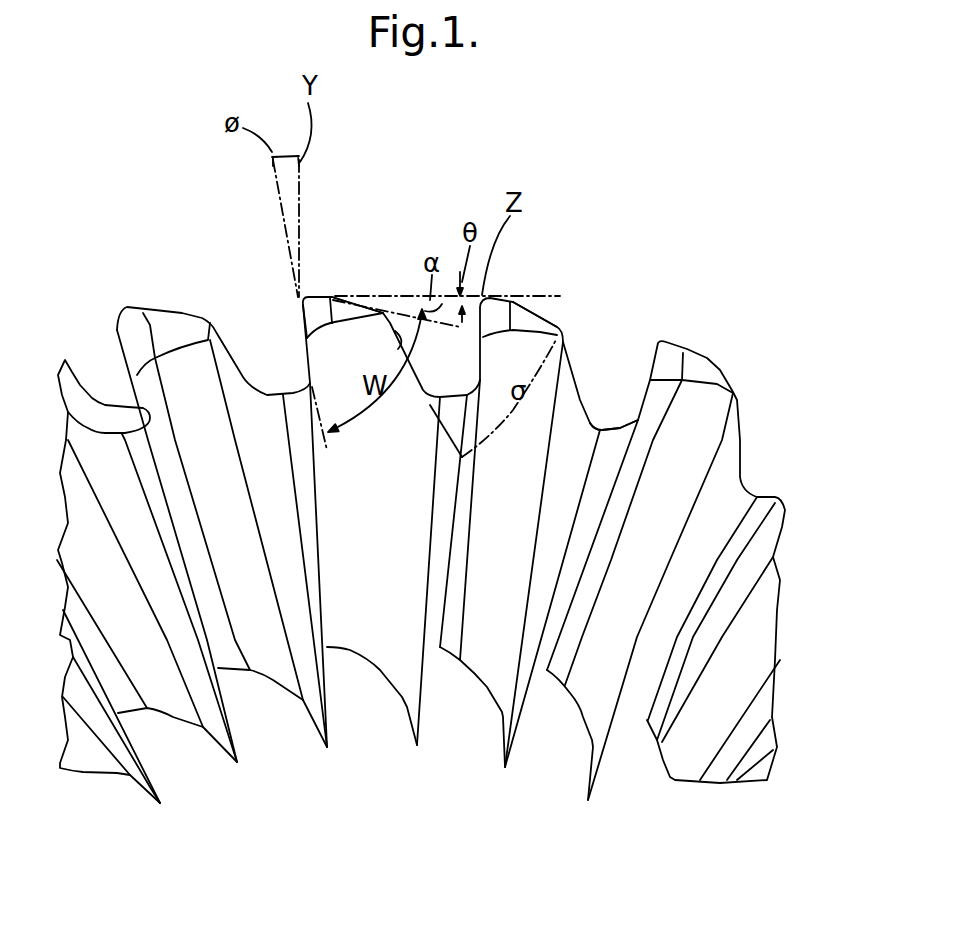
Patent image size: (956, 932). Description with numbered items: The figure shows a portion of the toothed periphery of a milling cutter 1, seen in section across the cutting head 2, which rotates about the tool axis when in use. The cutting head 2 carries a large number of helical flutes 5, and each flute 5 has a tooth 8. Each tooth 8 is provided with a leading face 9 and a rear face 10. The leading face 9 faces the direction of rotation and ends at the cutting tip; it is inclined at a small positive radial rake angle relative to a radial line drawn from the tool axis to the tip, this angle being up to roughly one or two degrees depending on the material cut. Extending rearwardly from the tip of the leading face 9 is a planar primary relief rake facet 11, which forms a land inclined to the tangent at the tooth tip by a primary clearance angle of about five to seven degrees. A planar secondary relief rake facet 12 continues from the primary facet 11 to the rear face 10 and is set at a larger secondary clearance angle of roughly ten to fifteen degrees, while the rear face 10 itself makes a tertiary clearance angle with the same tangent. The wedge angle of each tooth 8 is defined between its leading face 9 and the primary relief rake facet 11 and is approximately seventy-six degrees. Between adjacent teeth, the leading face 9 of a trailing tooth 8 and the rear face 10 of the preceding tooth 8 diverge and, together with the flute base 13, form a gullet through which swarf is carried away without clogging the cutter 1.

The milling cutter 1 is at (618, 278).
The cutting head 2 is at (748, 435).
The helical flute 5 is at (255, 298).
The tooth 8 is at (174, 318).
The leading face 9 is at (307, 347).
The rear face 10 is at (392, 338).
The primary relief rake facet 11 is at (310, 297).
The secondary relief rake facet 12 is at (358, 308).
The flute base 13 is at (617, 430).